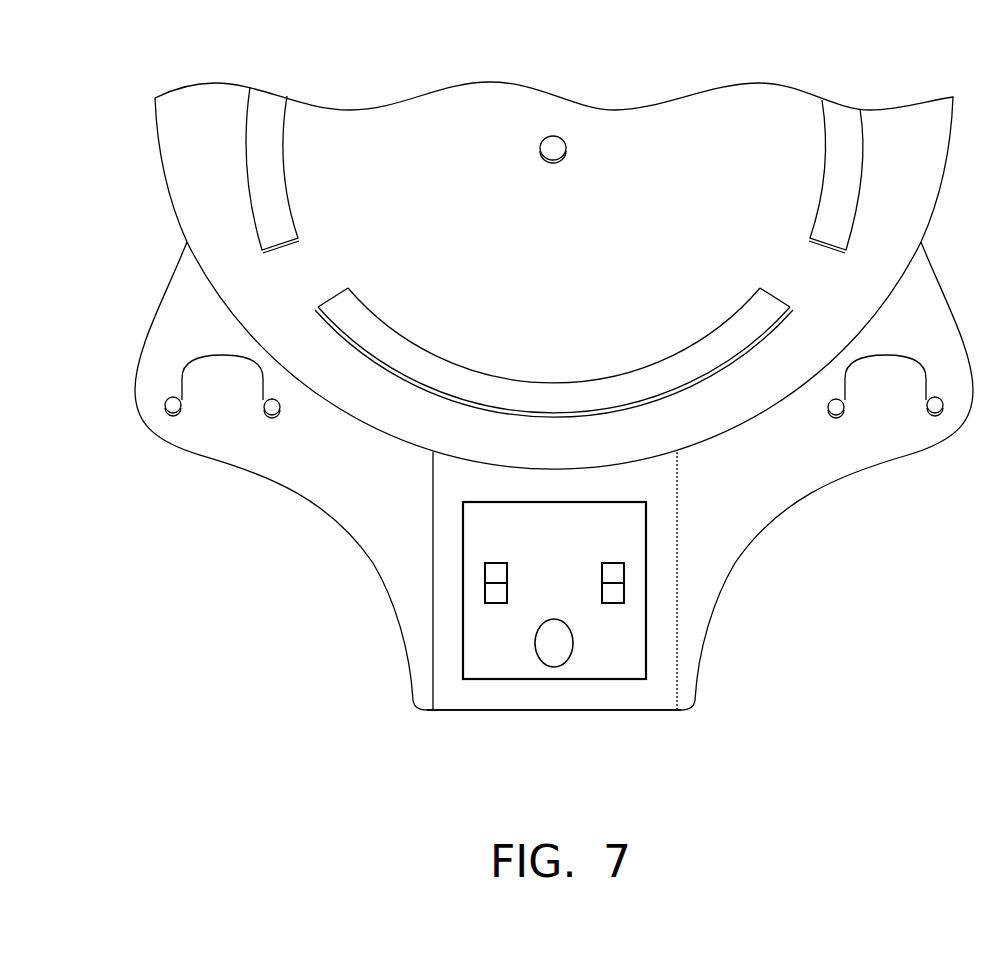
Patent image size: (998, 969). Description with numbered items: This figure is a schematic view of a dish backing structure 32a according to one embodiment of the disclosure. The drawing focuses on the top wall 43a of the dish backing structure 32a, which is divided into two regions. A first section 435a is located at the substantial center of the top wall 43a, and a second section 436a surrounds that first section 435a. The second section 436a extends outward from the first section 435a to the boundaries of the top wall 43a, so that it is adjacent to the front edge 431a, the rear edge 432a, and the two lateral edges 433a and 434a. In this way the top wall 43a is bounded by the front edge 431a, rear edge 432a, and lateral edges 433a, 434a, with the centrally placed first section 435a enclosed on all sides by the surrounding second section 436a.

The dish backing structure 32a is at (86, 81).
The top wall 43a is at (658, 683).
The front edge 431a is at (555, 710).
The rear edge 432a is at (553, 468).
The lateral edge 433a is at (677, 581).
The lateral edge 434a is at (433, 584).
The first section 435a is at (599, 539).
The second section 436a is at (656, 627).